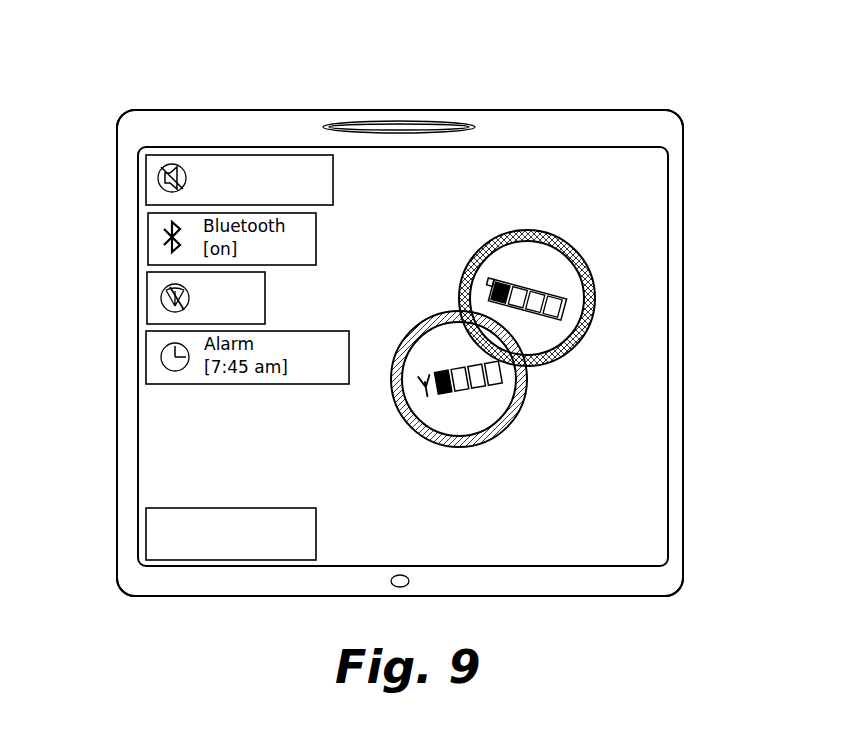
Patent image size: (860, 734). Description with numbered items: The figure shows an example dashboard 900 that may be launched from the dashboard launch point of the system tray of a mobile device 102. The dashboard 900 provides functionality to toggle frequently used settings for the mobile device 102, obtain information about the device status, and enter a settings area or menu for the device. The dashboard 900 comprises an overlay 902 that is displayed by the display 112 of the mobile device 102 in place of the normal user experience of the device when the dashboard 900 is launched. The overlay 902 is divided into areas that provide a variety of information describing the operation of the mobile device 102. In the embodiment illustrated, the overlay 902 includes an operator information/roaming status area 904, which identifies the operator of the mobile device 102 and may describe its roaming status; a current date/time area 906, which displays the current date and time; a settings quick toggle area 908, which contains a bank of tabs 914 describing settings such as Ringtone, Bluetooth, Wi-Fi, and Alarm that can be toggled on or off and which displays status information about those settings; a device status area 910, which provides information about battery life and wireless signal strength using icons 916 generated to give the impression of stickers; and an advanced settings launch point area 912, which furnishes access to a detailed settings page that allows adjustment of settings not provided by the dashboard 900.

The dashboard 900 is at (710, 56).
The mobile device 102 is at (683, 378).
The display 112 is at (668, 308).
The overlay 902 is at (400, 147).
The operator information/roaming status area 904 is at (547, 160).
The current date/time area 906 is at (645, 498).
The settings quick toggle area 908 is at (143, 204).
The device status area 910 is at (580, 319).
The advanced settings launch point area 912 is at (156, 502).
The tabs 914 is at (148, 298).
The icons 916 is at (593, 282).